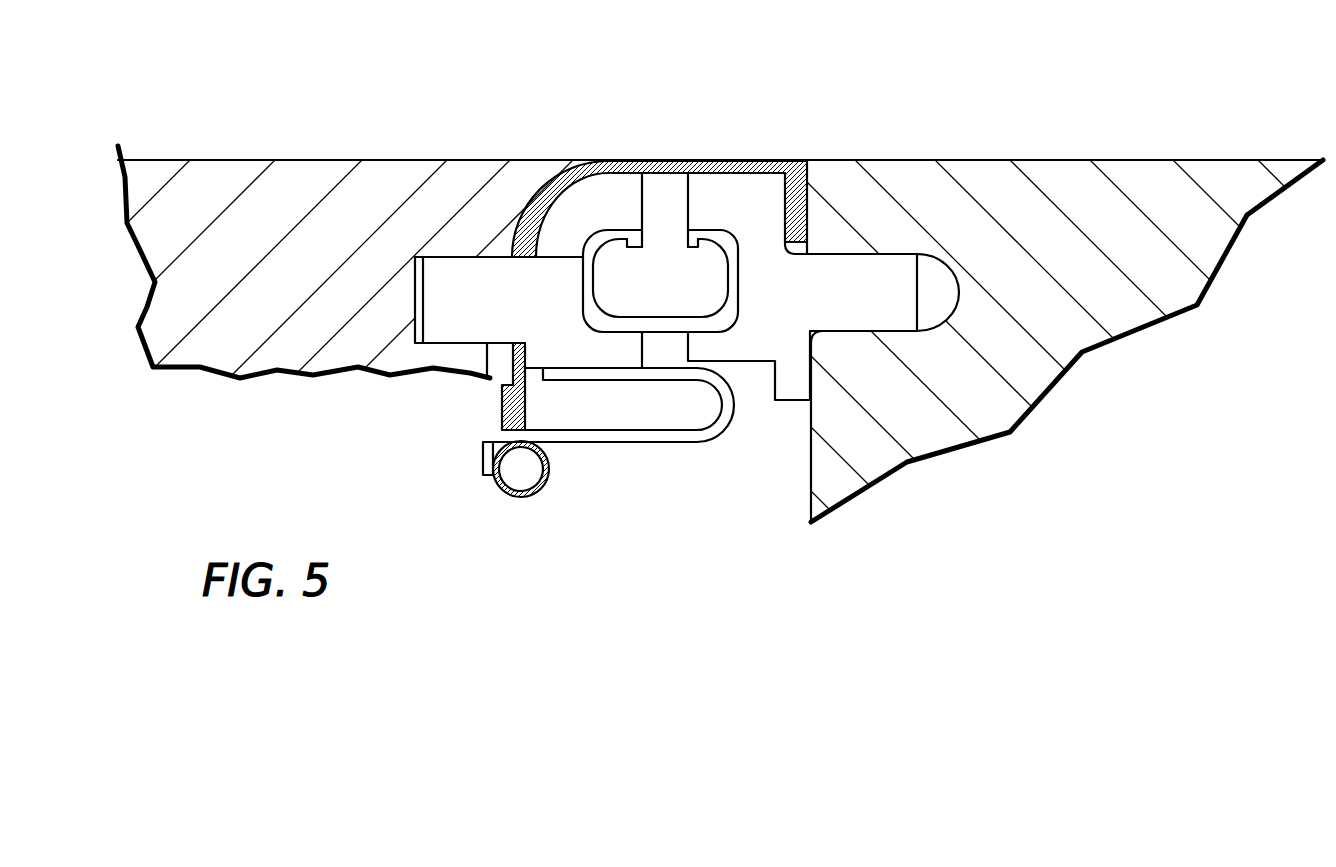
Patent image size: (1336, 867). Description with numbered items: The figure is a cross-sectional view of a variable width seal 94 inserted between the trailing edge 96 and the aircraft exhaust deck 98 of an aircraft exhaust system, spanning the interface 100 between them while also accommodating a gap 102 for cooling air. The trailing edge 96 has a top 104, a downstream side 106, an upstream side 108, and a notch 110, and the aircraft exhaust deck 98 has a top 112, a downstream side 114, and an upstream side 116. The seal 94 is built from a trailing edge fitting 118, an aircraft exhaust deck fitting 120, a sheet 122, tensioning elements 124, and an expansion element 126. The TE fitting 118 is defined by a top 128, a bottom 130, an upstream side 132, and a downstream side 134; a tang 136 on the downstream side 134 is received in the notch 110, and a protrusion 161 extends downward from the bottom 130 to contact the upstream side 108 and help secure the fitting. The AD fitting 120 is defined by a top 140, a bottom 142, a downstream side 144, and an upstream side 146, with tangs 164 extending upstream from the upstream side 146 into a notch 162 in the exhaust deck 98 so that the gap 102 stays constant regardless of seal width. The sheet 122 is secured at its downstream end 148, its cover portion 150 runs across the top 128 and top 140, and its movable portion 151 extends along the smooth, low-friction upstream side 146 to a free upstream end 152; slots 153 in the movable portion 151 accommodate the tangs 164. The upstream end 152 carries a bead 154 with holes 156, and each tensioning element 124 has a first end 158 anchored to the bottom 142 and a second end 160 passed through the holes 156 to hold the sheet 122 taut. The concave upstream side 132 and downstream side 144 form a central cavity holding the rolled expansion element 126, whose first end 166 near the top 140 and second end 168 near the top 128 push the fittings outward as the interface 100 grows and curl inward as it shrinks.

The variable width seal 94 is at (687, 85).
The trailing edge 96 is at (1038, 420).
The aircraft exhaust deck 98 is at (177, 379).
The interface 100 is at (688, 398).
The gap for cooling air 102 is at (654, 182).
The top 104 is at (1053, 159).
The downstream side 106 is at (1163, 284).
The upstream side 108 is at (810, 215).
The notch 110 is at (958, 278).
The top 112 is at (269, 158).
The downstream side 114 is at (527, 210).
The upstream side 116 is at (175, 242).
The trailing edge fitting 118 is at (797, 446).
The aircraft exhaust deck fitting 120 is at (489, 383).
The sheet 122 is at (727, 159).
The tensioning elements 124 is at (633, 443).
The expansion element 126 is at (681, 315).
The top 128 is at (758, 214).
The bottom 130 is at (740, 360).
The upstream side 132 is at (738, 288).
The downstream side 134 is at (785, 240).
The tang 136 is at (863, 307).
The top 140 is at (637, 217).
The bottom 142 is at (597, 360).
The downstream side 144 is at (583, 272).
The upstream side 146 is at (537, 232).
The downstream end 148 is at (812, 176).
The cover portion 150 is at (662, 159).
The movable portion 151 is at (530, 233).
The upstream end 152 is at (526, 366).
The slots 153 is at (485, 351).
The bead 154 is at (547, 488).
The holes 156 is at (515, 427).
The first end 158 is at (612, 373).
The second end 160 is at (560, 437).
The protrusion 161 is at (797, 384).
The notch 162 is at (415, 283).
The tangs 164 is at (440, 330).
The first end 166 is at (628, 247).
The second end 168 is at (698, 248).